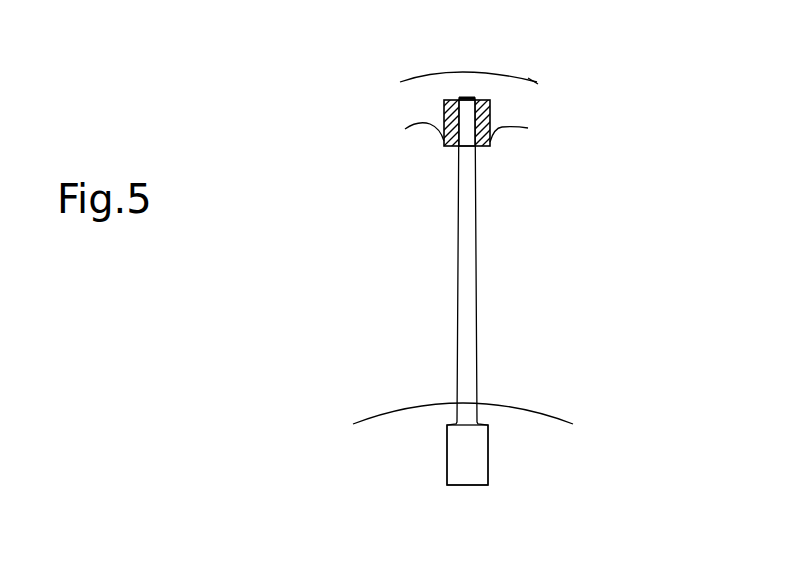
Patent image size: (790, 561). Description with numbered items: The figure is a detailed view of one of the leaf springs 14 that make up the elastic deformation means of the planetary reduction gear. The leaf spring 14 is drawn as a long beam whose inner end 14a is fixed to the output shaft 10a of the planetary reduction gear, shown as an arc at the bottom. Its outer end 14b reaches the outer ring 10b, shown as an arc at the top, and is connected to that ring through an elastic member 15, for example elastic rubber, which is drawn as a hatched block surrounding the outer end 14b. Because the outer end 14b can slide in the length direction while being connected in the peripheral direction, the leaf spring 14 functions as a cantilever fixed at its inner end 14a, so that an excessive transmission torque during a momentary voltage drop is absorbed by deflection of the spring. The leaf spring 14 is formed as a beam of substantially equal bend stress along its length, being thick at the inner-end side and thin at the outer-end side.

The output shaft 10a is at (410, 447).
The outer ring 10b is at (418, 92).
The leaf spring 14 is at (457, 300).
The inner end 14a is at (470, 408).
The outer end 14b is at (490, 142).
The elastic member 15 is at (490, 108).